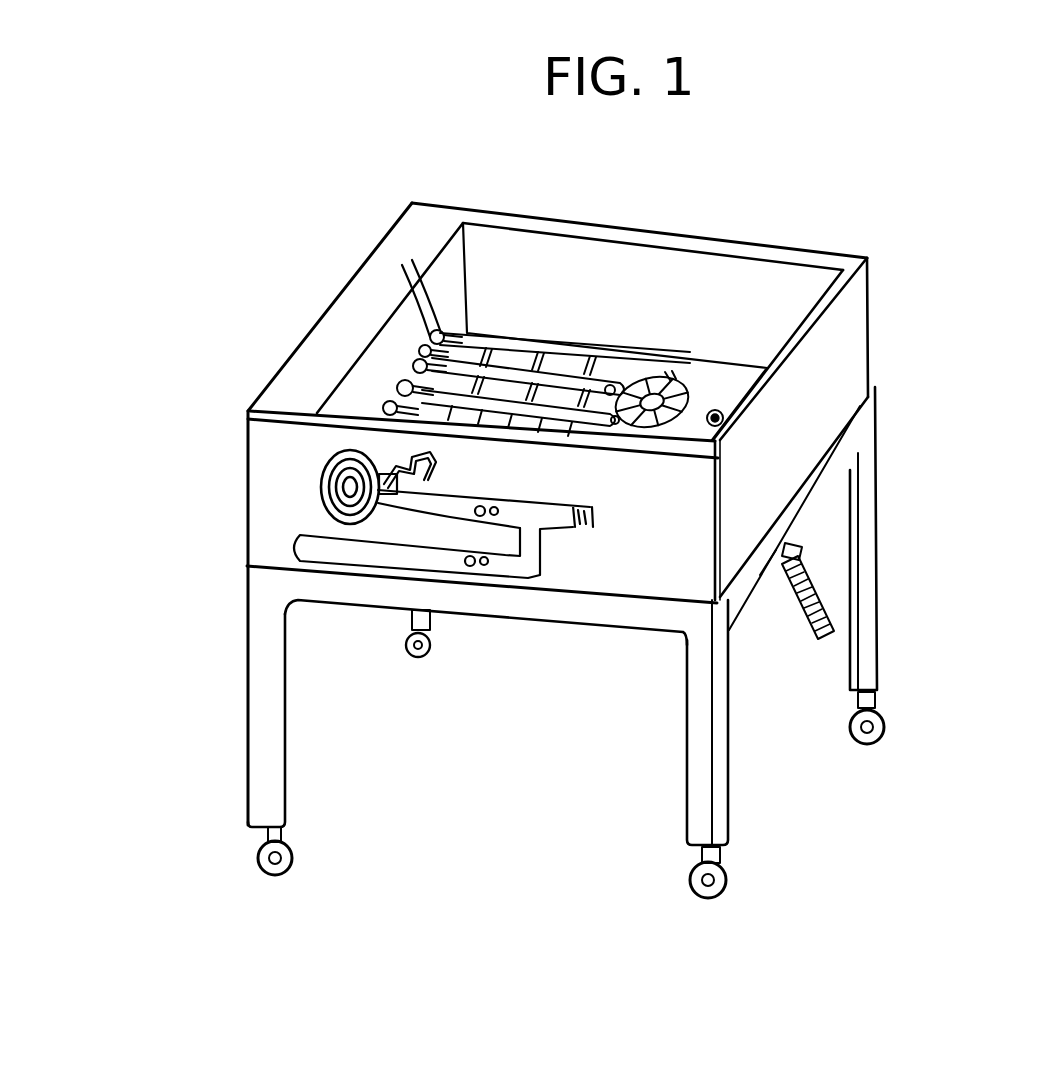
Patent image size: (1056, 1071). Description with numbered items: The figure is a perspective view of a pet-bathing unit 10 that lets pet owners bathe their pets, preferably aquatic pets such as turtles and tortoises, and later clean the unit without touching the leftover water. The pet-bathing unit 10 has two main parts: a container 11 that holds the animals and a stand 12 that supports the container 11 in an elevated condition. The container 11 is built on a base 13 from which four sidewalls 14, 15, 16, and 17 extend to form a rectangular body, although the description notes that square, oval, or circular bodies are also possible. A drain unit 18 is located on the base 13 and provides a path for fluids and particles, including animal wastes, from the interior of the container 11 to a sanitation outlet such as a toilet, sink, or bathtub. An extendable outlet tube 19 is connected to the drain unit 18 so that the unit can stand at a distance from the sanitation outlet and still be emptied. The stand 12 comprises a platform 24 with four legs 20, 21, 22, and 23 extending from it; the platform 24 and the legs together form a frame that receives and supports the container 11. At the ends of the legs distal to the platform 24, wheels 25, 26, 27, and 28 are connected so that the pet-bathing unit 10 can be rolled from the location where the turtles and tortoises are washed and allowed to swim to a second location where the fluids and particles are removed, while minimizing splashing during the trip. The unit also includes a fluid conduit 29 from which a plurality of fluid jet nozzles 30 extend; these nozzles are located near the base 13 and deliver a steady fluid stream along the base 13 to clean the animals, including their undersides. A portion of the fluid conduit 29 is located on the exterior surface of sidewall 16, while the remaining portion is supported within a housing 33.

The pet-bathing unit 10 is at (938, 195).
The container 11 is at (868, 340).
The stand 12 is at (895, 465).
The base 13 is at (737, 399).
The sidewall 14 is at (650, 232).
The sidewall 15 is at (380, 343).
The sidewall 16 is at (640, 447).
The sidewall 17 is at (776, 374).
The drain unit 18 is at (775, 603).
The extendable outlet tube 19 is at (818, 643).
The leg 20 is at (720, 810).
The leg 21 is at (882, 617).
The leg 22 is at (430, 618).
The leg 23 is at (247, 668).
The platform 24 is at (345, 593).
The wheel 25 is at (727, 882).
The wheel 26 is at (885, 723).
The wheel 27 is at (423, 658).
The wheel 28 is at (257, 857).
The fluid conduit 29 is at (307, 548).
The fluid jet nozzles 30 is at (410, 262).
The housing 33 is at (297, 370).